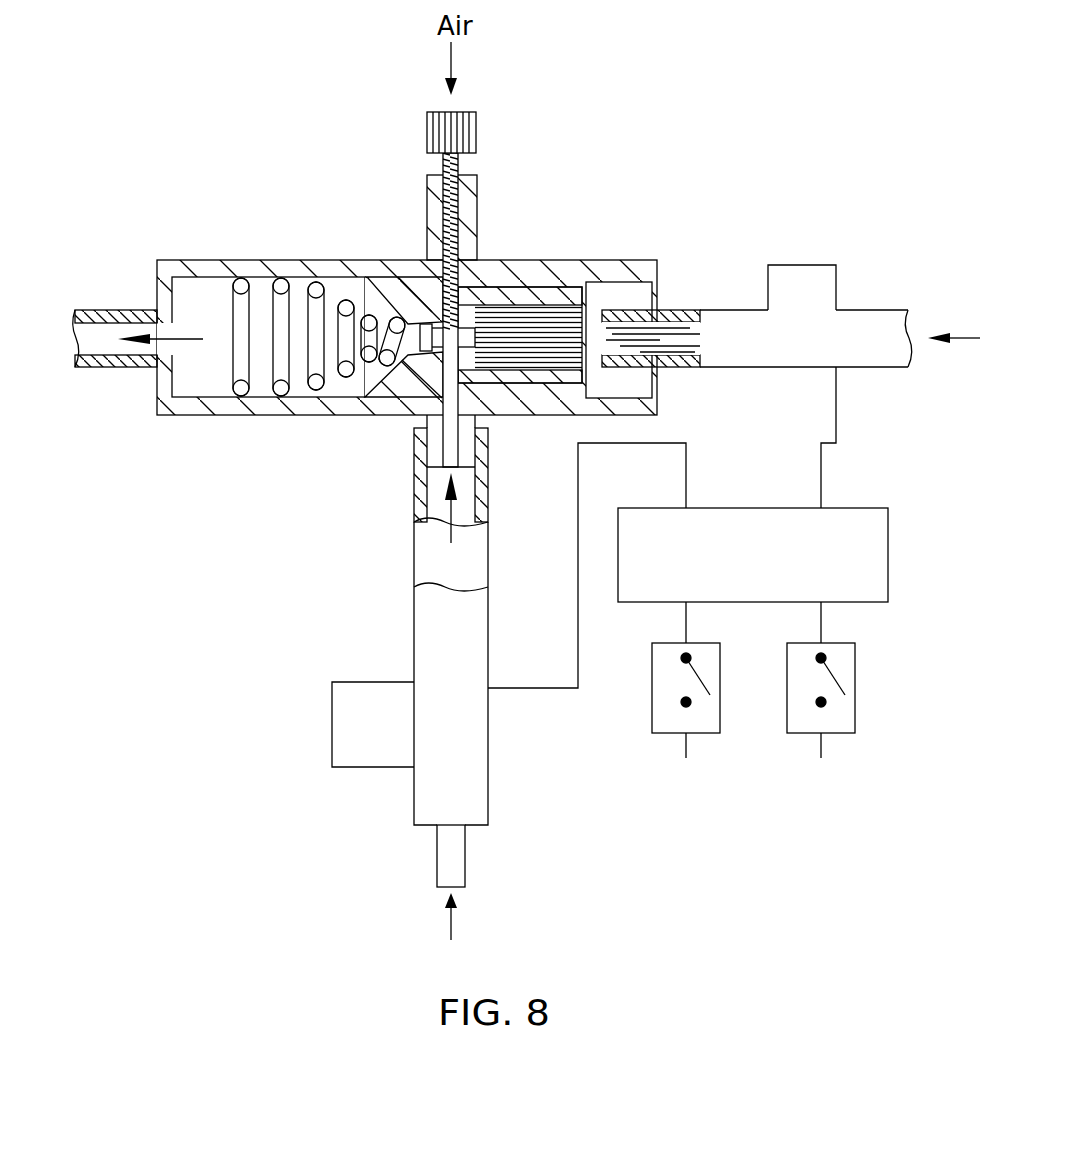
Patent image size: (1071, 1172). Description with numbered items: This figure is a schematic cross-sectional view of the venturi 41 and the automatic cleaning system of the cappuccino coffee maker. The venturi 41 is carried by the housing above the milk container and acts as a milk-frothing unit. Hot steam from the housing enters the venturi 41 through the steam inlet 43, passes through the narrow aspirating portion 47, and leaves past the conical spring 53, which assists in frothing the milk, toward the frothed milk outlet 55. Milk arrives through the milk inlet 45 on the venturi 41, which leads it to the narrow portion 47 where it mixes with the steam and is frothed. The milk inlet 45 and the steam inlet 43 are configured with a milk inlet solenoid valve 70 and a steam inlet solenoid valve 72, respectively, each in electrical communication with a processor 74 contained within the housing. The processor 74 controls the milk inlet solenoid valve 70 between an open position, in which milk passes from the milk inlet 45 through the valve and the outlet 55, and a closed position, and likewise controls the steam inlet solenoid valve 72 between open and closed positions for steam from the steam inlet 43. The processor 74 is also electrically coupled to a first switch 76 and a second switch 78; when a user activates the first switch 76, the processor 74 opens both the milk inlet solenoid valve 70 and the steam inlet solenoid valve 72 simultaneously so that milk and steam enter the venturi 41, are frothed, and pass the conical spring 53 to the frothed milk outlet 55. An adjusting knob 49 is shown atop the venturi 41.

The venturi 41 is at (505, 262).
The steam inlet 43 is at (860, 308).
The milk inlet 45 is at (414, 797).
The narrow aspirating portion 47 is at (402, 287).
The adjustment knob 49 is at (440, 137).
The conical spring 53 is at (222, 398).
The frothed milk outlet 55 is at (98, 340).
The milk inlet solenoid valve 70 is at (352, 692).
The steam inlet solenoid valve 72 is at (783, 283).
The processor 74 is at (668, 506).
The first switch 76 is at (668, 641).
The second switch 78 is at (803, 641).